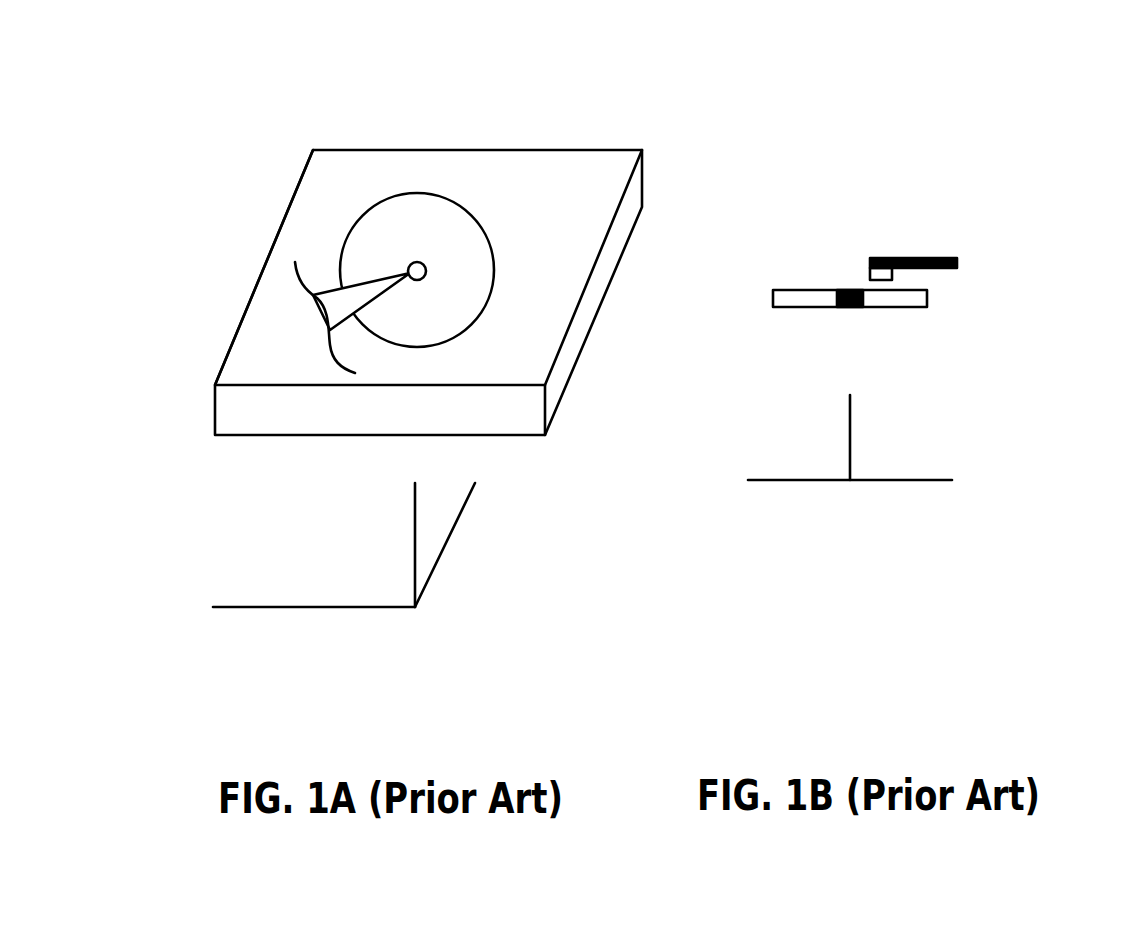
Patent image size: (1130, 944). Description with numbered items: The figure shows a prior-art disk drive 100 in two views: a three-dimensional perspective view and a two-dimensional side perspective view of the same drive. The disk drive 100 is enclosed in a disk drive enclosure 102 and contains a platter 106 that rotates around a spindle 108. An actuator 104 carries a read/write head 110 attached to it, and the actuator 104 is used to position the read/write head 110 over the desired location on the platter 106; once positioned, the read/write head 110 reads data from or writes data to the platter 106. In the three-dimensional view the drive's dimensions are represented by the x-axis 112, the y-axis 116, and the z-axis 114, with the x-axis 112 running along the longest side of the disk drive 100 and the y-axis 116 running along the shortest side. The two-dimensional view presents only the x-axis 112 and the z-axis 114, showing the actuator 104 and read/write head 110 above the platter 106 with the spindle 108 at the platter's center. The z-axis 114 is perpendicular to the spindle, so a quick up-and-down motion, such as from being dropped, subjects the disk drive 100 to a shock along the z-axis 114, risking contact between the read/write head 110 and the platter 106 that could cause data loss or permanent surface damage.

In FIG. 1A, the disk drive 100 is at (558, 214).
In FIG. 1A, the disk drive enclosure 102 is at (214, 413).
In FIG. 1A, the actuator 104 is at (346, 305).
In FIG. 1B, the actuator 104 is at (937, 258).
In FIG. 1A, the platter 106 is at (422, 220).
In FIG. 1B, the platter 106 is at (897, 307).
In FIG. 1A, the spindle 108 is at (426, 270).
In FIG. 1B, the spindle 108 is at (845, 307).
In FIG. 1B, the read/write head 110 is at (862, 270).
In FIG. 1A, the x-axis 112 is at (346, 607).
In FIG. 1B, the x-axis 112 is at (897, 480).
In FIG. 1A, the z-axis 114 is at (414, 533).
In FIG. 1B, the z-axis 114 is at (851, 432).
In FIG. 1A, the y-axis 116 is at (452, 532).